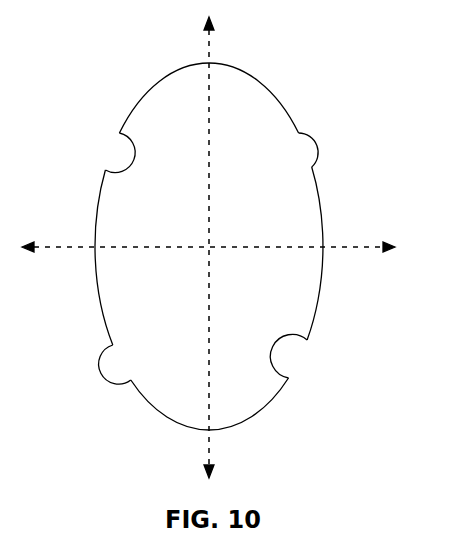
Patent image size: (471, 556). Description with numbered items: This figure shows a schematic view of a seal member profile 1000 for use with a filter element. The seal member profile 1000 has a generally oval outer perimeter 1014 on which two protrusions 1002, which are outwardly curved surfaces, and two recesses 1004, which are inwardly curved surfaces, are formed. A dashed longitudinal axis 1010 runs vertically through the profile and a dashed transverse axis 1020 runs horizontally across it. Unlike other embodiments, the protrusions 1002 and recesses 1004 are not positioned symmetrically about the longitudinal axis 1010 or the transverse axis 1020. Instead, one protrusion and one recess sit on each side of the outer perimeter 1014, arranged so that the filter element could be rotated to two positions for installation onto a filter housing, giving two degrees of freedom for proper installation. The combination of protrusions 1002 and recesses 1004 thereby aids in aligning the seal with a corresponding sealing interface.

The seal member profile 1000 is at (331, 91).
The protrusions 1002 is at (323, 153).
The recesses 1004 is at (127, 162).
The longitudinal axis 1010 is at (213, 46).
The outer perimeter 1014 is at (312, 336).
The transverse axis 1020 is at (355, 248).